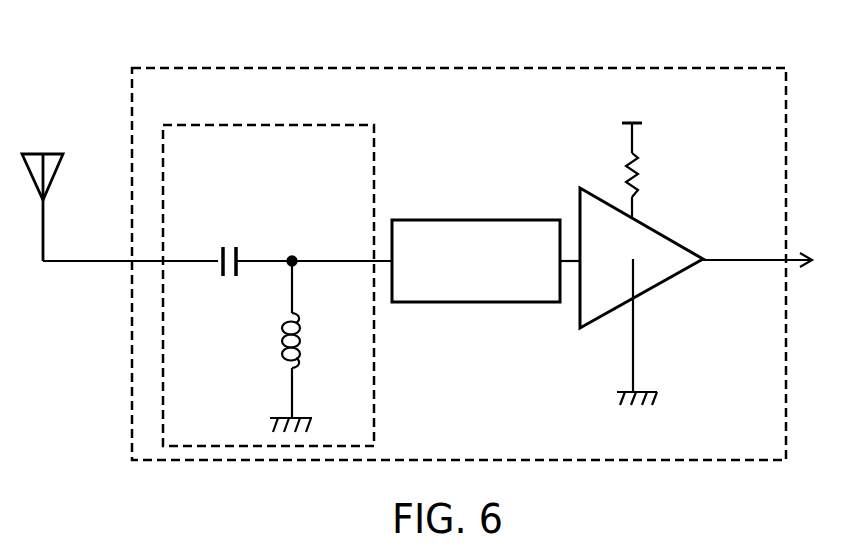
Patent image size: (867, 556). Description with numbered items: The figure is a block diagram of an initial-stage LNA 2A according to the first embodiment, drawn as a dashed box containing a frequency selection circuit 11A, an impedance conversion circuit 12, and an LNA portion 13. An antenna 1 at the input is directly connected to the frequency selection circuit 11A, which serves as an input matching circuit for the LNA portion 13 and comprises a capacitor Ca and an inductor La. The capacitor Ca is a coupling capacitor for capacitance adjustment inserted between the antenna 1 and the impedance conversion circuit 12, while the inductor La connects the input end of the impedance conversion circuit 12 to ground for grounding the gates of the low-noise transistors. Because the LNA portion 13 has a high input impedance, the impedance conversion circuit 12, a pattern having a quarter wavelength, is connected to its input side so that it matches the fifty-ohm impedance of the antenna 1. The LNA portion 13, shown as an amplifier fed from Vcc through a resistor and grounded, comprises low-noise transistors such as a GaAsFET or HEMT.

The antenna 1 is at (52, 152).
The initial-stage LNA 2A is at (608, 68).
The frequency selection circuit 11A is at (375, 178).
The impedance conversion circuit 12 is at (513, 218).
The LNA portion 13 is at (670, 240).